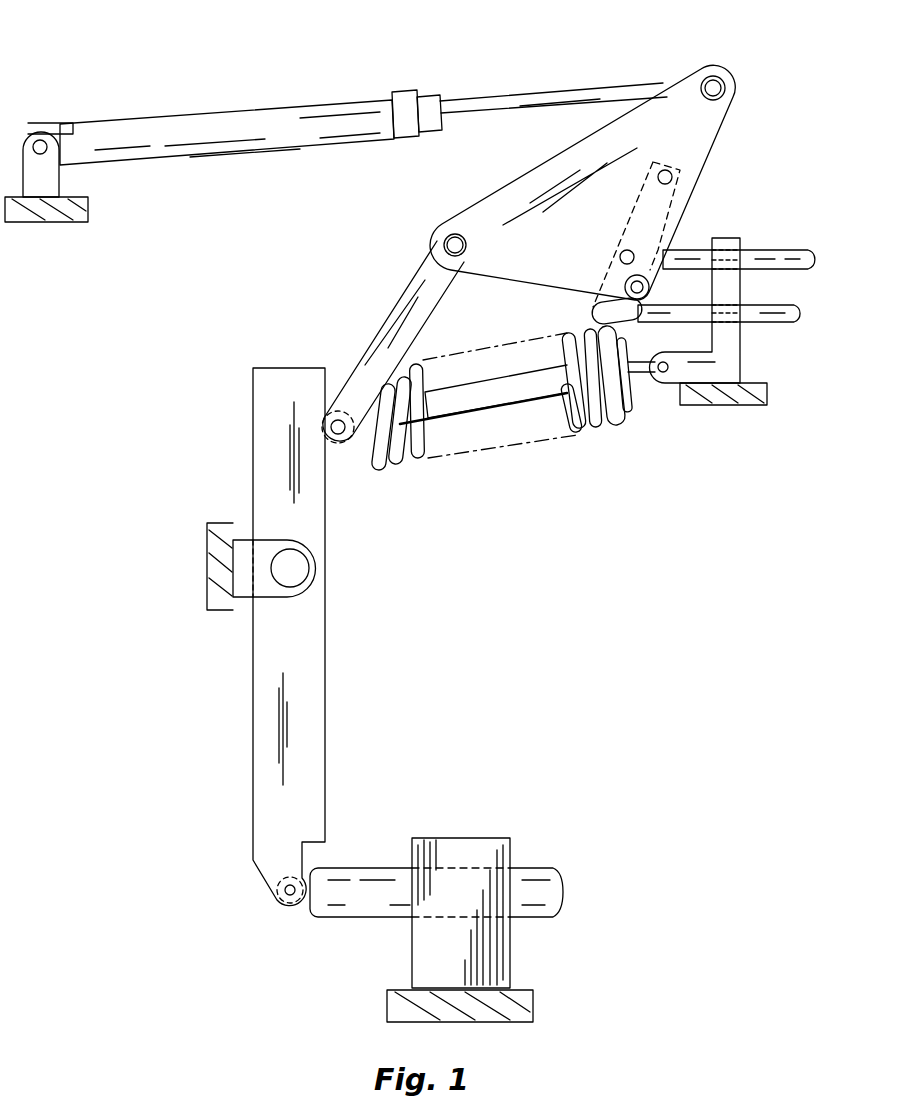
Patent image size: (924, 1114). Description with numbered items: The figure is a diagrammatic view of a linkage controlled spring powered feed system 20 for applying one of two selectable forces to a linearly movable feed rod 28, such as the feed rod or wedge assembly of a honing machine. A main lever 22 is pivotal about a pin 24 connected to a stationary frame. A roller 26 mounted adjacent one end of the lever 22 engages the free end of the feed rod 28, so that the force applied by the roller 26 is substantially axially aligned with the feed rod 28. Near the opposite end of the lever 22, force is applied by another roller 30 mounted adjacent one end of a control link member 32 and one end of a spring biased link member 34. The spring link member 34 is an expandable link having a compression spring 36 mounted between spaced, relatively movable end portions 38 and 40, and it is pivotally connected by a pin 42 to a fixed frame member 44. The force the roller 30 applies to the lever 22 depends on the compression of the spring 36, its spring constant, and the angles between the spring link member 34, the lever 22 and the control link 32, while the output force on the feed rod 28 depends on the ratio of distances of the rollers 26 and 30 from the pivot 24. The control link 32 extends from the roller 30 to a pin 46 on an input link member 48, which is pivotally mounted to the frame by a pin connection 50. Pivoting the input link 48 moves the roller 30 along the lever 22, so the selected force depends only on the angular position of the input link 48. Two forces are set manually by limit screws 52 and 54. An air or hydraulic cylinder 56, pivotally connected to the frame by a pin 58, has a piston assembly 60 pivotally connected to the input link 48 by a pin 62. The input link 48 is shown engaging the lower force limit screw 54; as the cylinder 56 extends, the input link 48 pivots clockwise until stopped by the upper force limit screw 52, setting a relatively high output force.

The linkage controlled spring powered feed system 20 is at (183, 493).
The main lever 22 is at (300, 656).
The pin 24 is at (296, 572).
The roller 26 is at (282, 902).
The feed rod 28 is at (350, 904).
The roller 30 is at (343, 446).
The control link member 32 is at (432, 298).
The spring biased link member 34 is at (504, 395).
The compression spring 36 is at (576, 432).
The end portion 38 is at (378, 470).
The end portion 40 is at (630, 415).
The pin 42 is at (692, 396).
The frame member 44 is at (732, 373).
The pin 46 is at (445, 244).
The input link member 48 is at (700, 146).
The pin connection 50 is at (650, 284).
The limit screw 52 is at (765, 250).
The limit screw 54 is at (806, 314).
The cylinder 56 is at (250, 104).
The pin 58 is at (40, 132).
The piston assembly 60 is at (510, 97).
The pin 62 is at (724, 89).